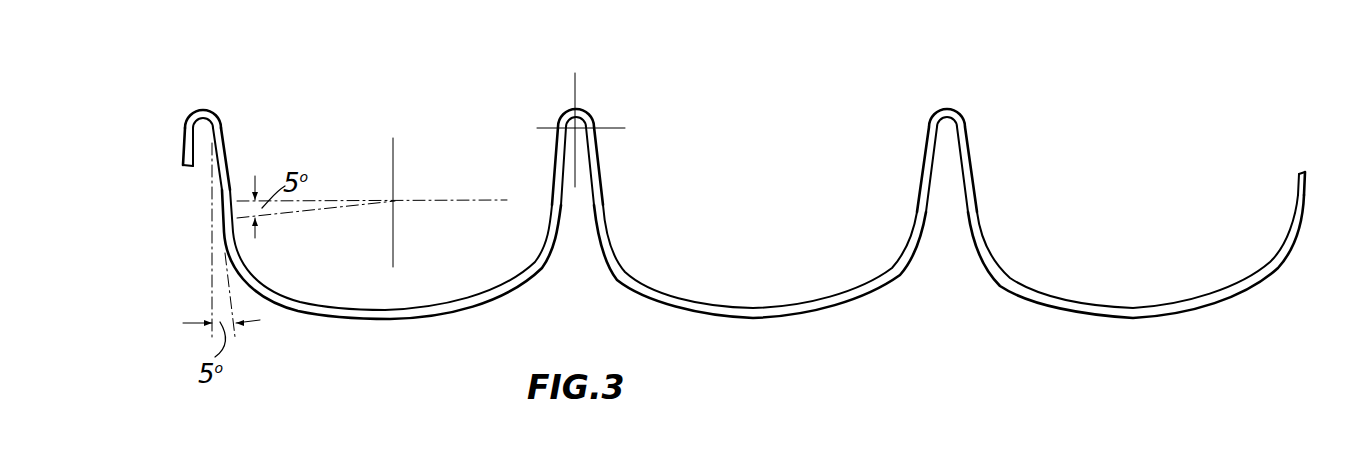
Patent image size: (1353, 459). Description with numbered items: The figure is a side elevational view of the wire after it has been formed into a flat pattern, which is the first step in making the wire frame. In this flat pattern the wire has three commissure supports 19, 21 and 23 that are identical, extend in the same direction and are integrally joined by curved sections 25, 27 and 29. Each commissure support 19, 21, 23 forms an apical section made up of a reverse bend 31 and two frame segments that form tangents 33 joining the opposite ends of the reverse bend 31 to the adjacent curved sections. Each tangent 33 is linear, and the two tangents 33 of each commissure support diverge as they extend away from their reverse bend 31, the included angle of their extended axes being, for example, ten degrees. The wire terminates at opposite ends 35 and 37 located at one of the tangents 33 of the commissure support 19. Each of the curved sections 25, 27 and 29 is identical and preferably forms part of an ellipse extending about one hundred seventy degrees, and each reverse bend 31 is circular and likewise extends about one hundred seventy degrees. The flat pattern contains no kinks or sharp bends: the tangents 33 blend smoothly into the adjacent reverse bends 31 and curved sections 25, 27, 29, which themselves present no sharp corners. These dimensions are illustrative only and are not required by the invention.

The commissure support 19 is at (745, 206).
The commissure support 21 is at (602, 134).
The commissure support 23 is at (973, 113).
The curved section 25 is at (381, 318).
The curved section 27 is at (812, 311).
The curved section 29 is at (1146, 316).
The reverse bend 31 is at (195, 112).
The tangent 33 is at (186, 137).
The end of wire 35 is at (184, 165).
The end of wire 37 is at (1308, 170).